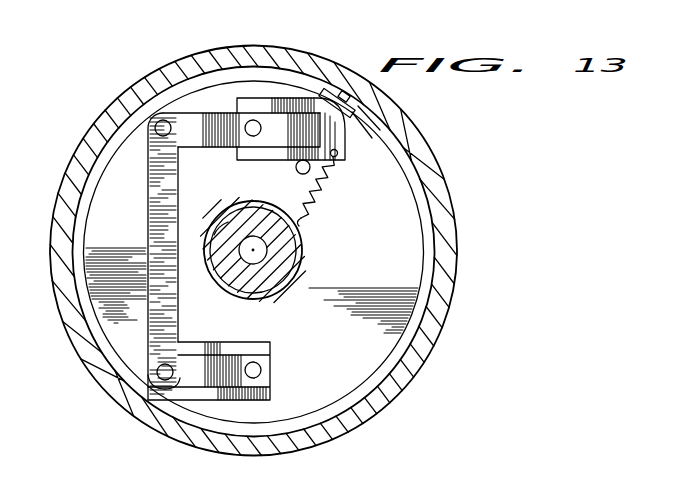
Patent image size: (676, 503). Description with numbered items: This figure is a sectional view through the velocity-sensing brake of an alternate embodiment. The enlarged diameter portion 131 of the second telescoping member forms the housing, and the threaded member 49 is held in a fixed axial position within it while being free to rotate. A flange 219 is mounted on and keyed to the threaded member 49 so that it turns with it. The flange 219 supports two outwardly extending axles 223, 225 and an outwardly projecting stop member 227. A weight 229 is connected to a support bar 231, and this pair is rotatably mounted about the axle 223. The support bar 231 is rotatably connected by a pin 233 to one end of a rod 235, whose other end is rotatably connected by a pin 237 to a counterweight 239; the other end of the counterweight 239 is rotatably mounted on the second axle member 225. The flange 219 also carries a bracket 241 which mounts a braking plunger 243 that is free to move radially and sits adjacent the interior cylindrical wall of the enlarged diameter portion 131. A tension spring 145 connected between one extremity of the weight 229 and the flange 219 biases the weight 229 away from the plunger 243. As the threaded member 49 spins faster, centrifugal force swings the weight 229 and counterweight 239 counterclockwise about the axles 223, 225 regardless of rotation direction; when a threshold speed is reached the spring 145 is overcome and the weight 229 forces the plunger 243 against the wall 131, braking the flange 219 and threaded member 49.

The enlarged diameter portion 131 is at (436, 193).
The flange 219 is at (410, 245).
The rod 235 is at (156, 216).
The support bar 231 is at (192, 120).
The axle 223 is at (253, 133).
The weight 229 is at (267, 107).
The pin 233 is at (158, 127).
The braking plunger 243 is at (340, 90).
The bracket 241 is at (353, 104).
The stop member 227 is at (300, 170).
The tension spring 145 is at (303, 213).
The threaded member 49 is at (278, 271).
The second axle member 225 is at (258, 370).
The counterweight 239 is at (223, 358).
The pin 237 is at (165, 372).